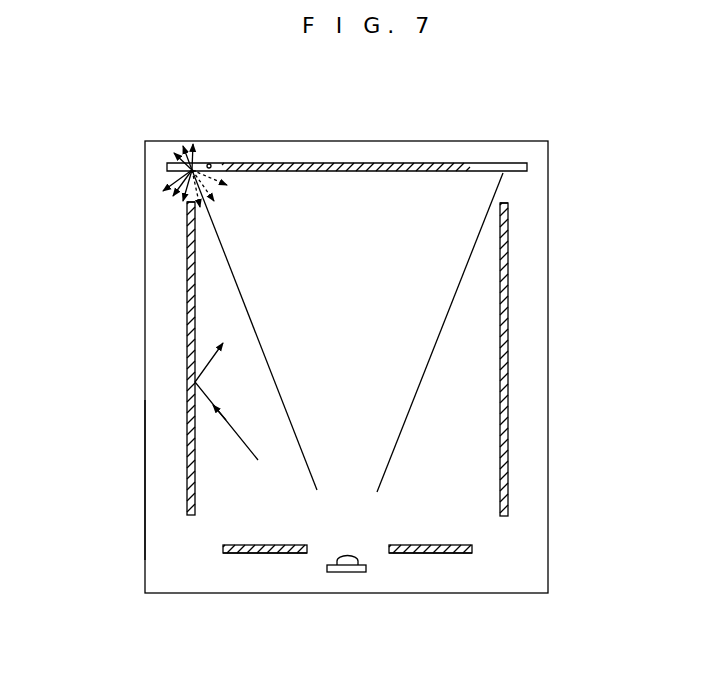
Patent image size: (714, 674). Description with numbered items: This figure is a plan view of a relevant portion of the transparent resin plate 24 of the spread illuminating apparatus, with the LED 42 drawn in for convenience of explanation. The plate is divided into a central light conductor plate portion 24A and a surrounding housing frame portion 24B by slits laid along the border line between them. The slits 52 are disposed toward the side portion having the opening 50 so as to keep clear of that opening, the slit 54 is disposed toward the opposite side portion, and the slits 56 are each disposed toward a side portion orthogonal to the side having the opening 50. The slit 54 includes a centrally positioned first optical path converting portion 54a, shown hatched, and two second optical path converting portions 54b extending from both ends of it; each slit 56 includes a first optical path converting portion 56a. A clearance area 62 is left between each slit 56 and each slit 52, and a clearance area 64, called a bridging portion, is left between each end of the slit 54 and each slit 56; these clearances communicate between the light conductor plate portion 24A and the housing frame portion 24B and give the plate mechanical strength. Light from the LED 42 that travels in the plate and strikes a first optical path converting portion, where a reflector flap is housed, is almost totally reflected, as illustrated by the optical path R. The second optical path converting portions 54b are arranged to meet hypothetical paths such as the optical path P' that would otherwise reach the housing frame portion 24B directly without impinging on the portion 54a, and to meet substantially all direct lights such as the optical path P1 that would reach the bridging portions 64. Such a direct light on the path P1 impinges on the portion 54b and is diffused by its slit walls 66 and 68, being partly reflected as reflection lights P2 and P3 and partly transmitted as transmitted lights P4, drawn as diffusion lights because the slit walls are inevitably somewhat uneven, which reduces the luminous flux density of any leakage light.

The transparent resin plate 24 is at (548, 423).
The light conductor plate portion 24A is at (388, 340).
The housing frame portion 24B is at (143, 501).
The LED 42 is at (358, 572).
The opening 50 is at (336, 576).
The slits 52 is at (358, 599).
The slit 54 is at (347, 125).
The first optical path converting portion 54a is at (398, 163).
The second optical path converting portions 54b is at (197, 163).
The slits 56 is at (371, 359).
The first optical path converting portion 56a is at (186, 335).
The clearance area 62 is at (195, 537).
The clearance area (bridging portion) 64 is at (170, 166).
The slit wall 66 is at (209, 162).
The slit wall 68 is at (213, 173).
The optical path P1 is at (225, 255).
The reflection lights P2 is at (168, 200).
The reflection lights P3 is at (213, 203).
The transmitted lights P4 is at (178, 137).
The optical path P' is at (487, 332).
The optical path R is at (237, 433).